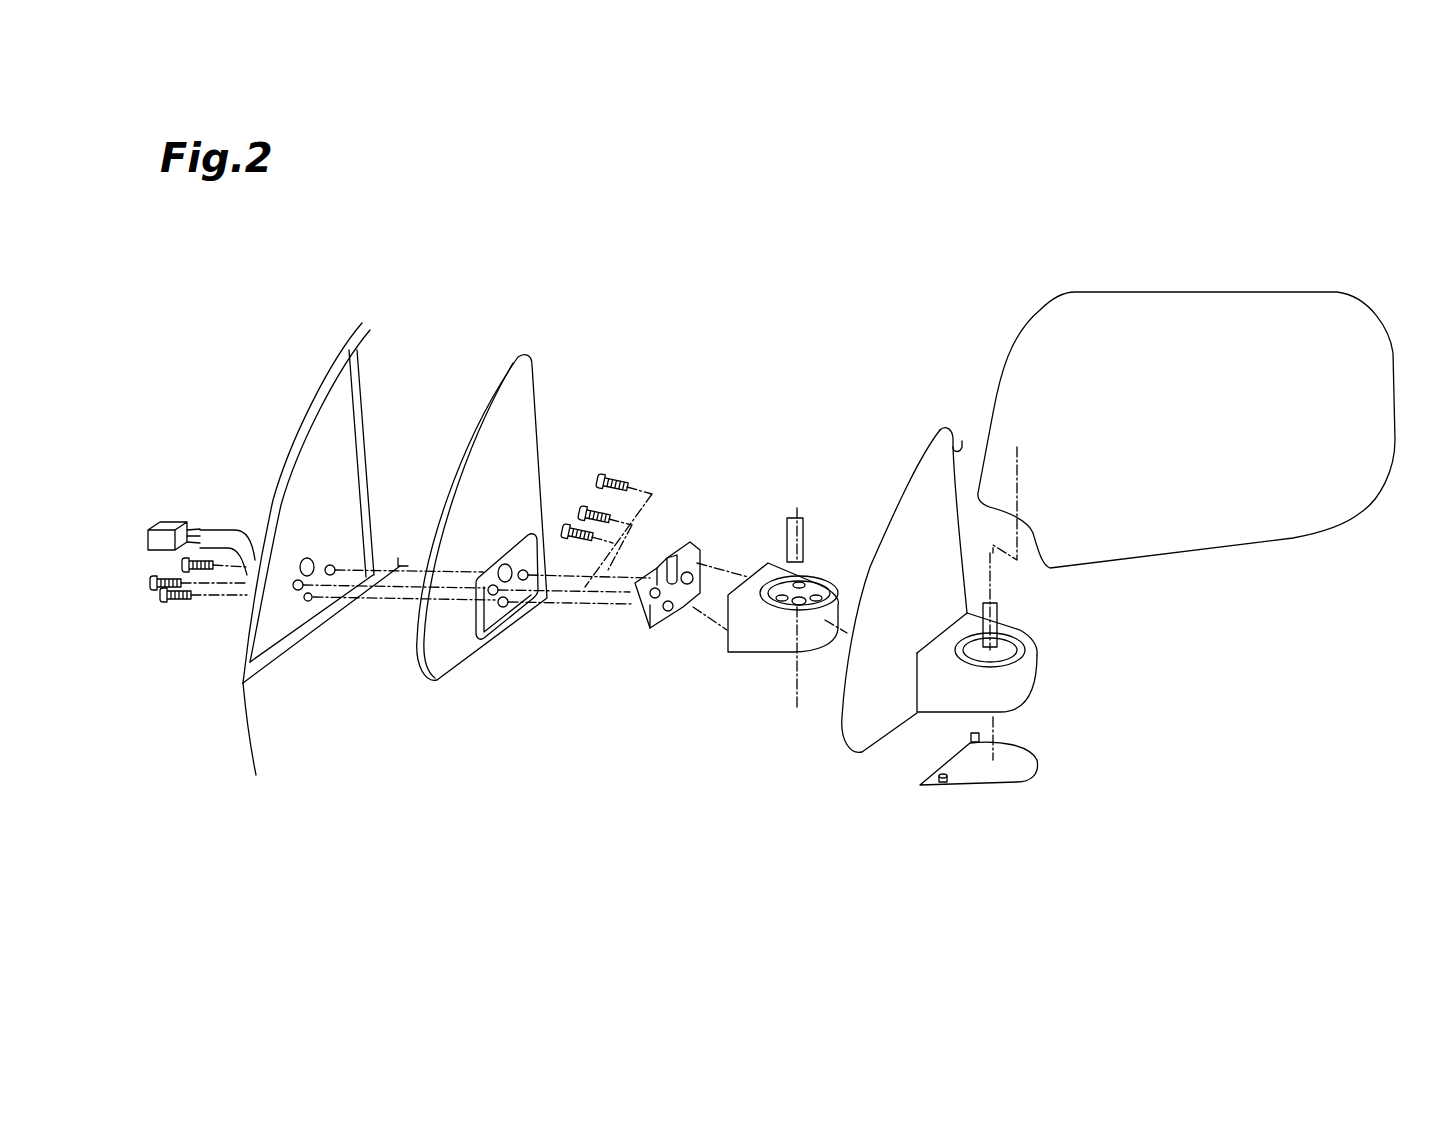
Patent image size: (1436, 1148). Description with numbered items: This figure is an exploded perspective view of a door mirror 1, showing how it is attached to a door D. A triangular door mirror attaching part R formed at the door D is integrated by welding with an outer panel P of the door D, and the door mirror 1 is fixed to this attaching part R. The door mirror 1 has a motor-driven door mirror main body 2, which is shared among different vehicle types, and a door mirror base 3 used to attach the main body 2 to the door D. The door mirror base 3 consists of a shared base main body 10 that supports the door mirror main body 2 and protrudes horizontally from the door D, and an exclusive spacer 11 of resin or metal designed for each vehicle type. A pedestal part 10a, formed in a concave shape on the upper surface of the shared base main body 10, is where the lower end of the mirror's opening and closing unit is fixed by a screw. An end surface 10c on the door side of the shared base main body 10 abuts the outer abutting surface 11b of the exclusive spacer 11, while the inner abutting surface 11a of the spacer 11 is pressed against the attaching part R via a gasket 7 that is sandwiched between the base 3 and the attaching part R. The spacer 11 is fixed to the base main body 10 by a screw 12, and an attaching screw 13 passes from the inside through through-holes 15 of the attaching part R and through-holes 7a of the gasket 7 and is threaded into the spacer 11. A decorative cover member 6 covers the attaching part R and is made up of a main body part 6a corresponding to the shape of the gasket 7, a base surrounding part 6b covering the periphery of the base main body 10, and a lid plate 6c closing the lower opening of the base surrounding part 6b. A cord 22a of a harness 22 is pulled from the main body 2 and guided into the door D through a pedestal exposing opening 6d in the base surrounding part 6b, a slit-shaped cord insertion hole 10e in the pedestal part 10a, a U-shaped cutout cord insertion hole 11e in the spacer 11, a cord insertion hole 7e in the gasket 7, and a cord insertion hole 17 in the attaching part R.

The door mirror 1 is at (955, 285).
The door mirror main body 2 is at (1277, 543).
The door mirror base 3 is at (785, 477).
The cover member 6 is at (976, 604).
The main body part 6a is at (953, 445).
The base surrounding part 6b is at (1038, 668).
The lid plate 6c is at (1015, 783).
The pedestal exposing opening 6d is at (1020, 648).
The gasket 7 is at (532, 412).
The through-holes 7a is at (505, 606).
The cord insertion hole 7e is at (507, 567).
The shared base main body 10 is at (777, 594).
The pedestal part 10a is at (817, 583).
The end surface 10c is at (727, 622).
The cord insertion hole 10e is at (787, 598).
The exclusive spacer 11 is at (667, 561).
The inner abutting surface 11a is at (628, 607).
The outer abutting surface 11b is at (680, 613).
The U-shaped cutout cord insertion hole 11e is at (670, 577).
The screw 12 is at (612, 473).
The attaching screw 13 is at (172, 600).
The through-holes 15 is at (308, 602).
The cord insertion hole 17 is at (308, 558).
The harness 22 is at (178, 512).
The cord 22a is at (220, 537).
The door D is at (358, 333).
The door mirror attaching part R is at (332, 433).
The outer panel P is at (270, 723).